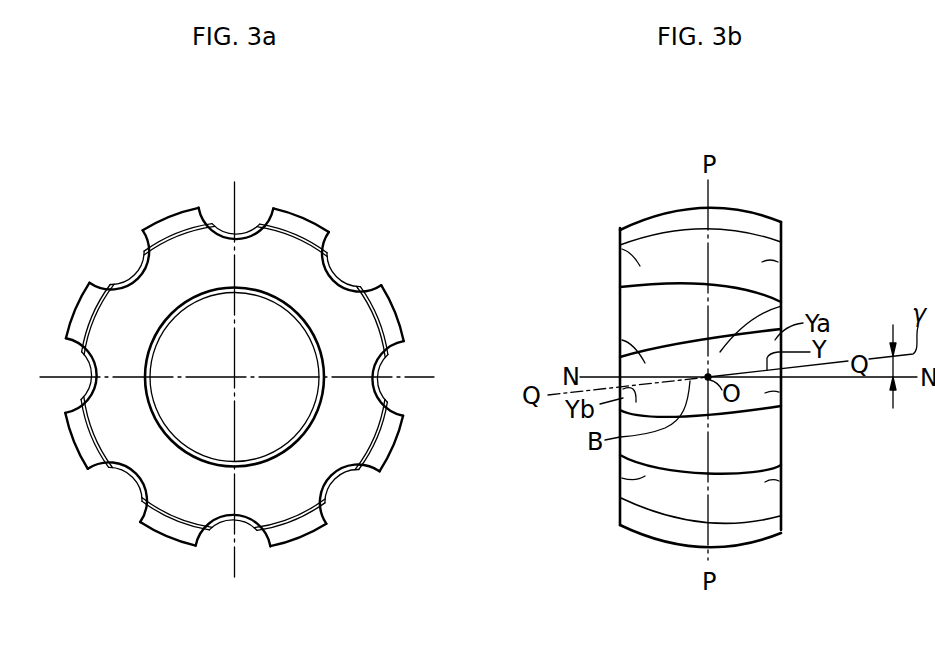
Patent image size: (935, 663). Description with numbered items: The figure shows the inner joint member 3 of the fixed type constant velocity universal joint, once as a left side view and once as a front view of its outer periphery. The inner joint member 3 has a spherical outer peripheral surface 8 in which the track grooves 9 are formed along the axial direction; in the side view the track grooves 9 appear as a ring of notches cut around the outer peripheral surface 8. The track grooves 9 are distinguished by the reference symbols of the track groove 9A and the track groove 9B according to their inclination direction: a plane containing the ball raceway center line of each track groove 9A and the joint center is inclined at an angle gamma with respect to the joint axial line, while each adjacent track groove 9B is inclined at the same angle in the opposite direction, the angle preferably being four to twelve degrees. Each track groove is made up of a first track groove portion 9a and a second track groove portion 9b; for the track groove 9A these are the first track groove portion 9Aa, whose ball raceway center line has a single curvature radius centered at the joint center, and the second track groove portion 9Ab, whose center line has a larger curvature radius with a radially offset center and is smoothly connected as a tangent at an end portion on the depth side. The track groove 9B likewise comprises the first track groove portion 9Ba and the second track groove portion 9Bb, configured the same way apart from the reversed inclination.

In FIG. 3a, the inner joint member 3 is at (401, 308).
In FIG. 3b, the inner joint member 3 is at (620, 297).
In FIG. 3a, the spherical outer peripheral surface 8 is at (307, 222).
In FIG. 3b, the spherical outer peripheral surface 8 is at (662, 216).
In FIG. 3a, the track grooves 9 is at (285, 383).
In FIG. 3b, the track grooves 9 is at (749, 378).
In FIG. 3a, the track groove 9A is at (263, 232).
In FIG. 3b, the track groove 9A is at (781, 306).
In FIG. 3a, the track groove 9B is at (325, 250).
In FIG. 3b, the track groove 9B is at (720, 255).
In FIG. 3b, the first track groove portion 9a is at (834, 369).
In FIG. 3b, the second track groove portion 9b is at (558, 358).
In FIG. 3b, the first track groove portion 9Aa is at (765, 393).
In FIG. 3b, the second track groove portion 9Ab is at (620, 342).
In FIG. 3b, the first track groove portion 9Ba is at (762, 262).
In FIG. 3b, the second track groove portion 9Bb is at (620, 247).